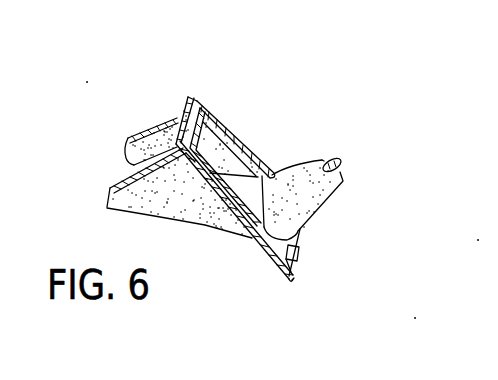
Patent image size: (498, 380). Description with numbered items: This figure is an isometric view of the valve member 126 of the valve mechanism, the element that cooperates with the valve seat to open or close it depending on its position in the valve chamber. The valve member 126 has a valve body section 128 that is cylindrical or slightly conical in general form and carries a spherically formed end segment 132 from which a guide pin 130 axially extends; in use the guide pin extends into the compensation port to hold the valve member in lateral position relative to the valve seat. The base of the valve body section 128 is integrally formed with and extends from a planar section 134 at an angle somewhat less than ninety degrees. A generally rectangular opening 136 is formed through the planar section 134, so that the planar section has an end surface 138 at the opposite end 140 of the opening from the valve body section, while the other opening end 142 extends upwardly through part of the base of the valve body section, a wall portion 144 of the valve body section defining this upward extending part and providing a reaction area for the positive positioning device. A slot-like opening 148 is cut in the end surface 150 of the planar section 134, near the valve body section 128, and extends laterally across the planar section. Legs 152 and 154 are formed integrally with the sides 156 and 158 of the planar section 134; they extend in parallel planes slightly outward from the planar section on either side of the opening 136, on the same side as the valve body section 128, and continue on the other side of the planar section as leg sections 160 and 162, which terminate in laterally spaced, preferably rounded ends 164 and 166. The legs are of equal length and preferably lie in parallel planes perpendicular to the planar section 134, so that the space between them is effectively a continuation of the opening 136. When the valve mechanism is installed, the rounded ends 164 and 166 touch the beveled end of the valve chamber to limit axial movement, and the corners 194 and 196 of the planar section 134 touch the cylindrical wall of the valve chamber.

The valve member 126 is at (308, 150).
The valve body section 128 is at (334, 192).
The guide pin 130 is at (336, 160).
The spherically formed end segment 132 is at (343, 166).
The planar section 134 is at (243, 234).
The rectangular opening 136 is at (243, 173).
The end surface 138 is at (188, 103).
The opposite end of opening 140 is at (177, 120).
The other opening end 142 is at (238, 180).
The wall portion 144 is at (282, 175).
The slot-like opening 148 is at (298, 258).
The end surface of planar section 150 is at (300, 248).
The leg 152 is at (133, 166).
The leg 154 is at (109, 211).
The side of planar section 156 is at (213, 113).
The side of planar section 158 is at (187, 194).
The leg section 160 is at (142, 137).
The leg section 162 is at (155, 201).
The rounded end 164 is at (128, 142).
The rounded end 166 is at (112, 191).
The corner of planar section 194 is at (291, 282).
The corner of planar section 196 is at (302, 232).